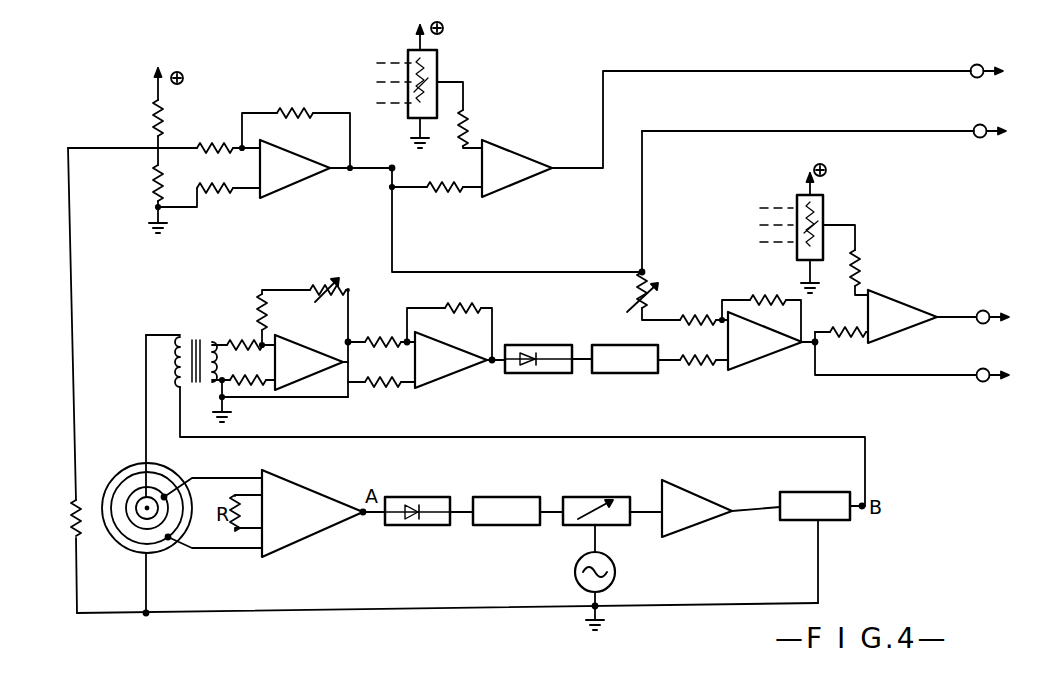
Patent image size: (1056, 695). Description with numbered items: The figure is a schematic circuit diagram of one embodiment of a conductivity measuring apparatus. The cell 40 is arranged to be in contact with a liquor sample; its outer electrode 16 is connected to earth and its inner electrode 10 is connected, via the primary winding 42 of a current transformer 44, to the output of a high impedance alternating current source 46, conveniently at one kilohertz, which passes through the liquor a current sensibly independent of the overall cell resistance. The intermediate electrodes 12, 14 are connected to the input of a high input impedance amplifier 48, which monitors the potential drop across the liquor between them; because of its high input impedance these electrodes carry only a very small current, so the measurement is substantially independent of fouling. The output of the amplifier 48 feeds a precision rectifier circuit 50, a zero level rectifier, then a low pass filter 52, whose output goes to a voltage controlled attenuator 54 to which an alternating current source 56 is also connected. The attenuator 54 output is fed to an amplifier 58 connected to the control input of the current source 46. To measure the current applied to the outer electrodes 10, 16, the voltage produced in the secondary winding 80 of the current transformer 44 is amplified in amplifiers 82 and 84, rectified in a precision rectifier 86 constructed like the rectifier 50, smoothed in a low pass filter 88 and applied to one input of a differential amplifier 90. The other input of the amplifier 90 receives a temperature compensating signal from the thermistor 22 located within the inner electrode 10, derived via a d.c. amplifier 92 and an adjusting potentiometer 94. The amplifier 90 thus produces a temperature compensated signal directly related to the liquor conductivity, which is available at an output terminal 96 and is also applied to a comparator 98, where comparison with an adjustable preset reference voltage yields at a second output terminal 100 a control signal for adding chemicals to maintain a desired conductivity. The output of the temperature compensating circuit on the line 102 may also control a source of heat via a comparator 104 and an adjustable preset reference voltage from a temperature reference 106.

The inner electrode 10 is at (137, 505).
The intermediate electrode 12 is at (156, 489).
The intermediate electrode 14 is at (165, 497).
The outer electrode 16 is at (132, 553).
The thermistor 22 is at (74, 532).
The cell 40 is at (128, 458).
The primary winding 42 is at (177, 370).
The current transformer 44 is at (194, 333).
The high impedance alternating current source 46 is at (841, 513).
The high input impedance amplifier 48 is at (302, 507).
The precision rectifier circuit 50 is at (419, 526).
The low pass filter 52 is at (500, 520).
The voltage controlled attenuator 54 is at (563, 523).
The alternating current source 56 is at (608, 584).
The amplifier 58 is at (676, 498).
The secondary winding 80 is at (214, 363).
The amplifier 82 is at (303, 362).
The amplifier 84 is at (445, 367).
The precision rectifier 86 is at (516, 366).
The low pass filter 88 is at (637, 366).
The differential amplifier 90 is at (770, 362).
The d.c. amplifier 92 is at (297, 167).
The adjusting potentiometer 94 is at (650, 303).
The output terminal 96 is at (981, 380).
The comparator 98 is at (890, 310).
The second output terminal 100 is at (983, 323).
The line 102 is at (392, 168).
The comparator 104 is at (496, 160).
The temperature reference 106 is at (432, 62).